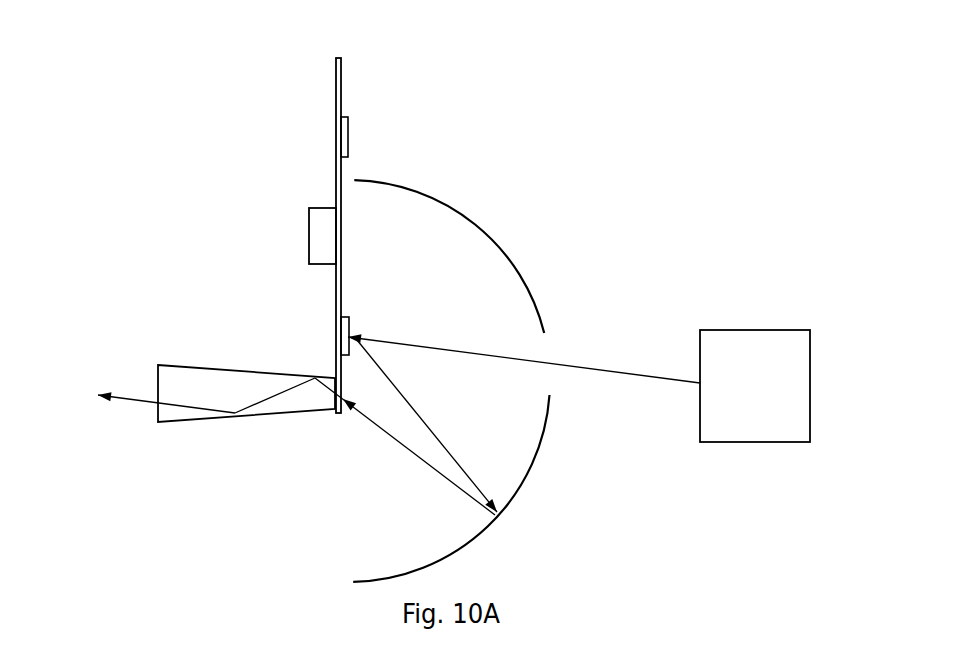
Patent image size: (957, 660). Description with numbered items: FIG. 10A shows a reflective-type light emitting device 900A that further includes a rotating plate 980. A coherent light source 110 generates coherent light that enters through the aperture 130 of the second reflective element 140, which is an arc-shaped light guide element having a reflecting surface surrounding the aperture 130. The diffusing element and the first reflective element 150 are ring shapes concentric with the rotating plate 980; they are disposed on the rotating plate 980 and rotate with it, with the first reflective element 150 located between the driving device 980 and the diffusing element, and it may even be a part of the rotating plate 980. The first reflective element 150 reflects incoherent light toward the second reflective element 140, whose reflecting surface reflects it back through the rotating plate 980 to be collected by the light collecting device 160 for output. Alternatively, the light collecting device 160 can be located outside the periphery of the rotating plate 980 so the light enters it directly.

The light emitting device 900A is at (225, 235).
The rotating plate 980 is at (305, 233).
The first reflective element 150 is at (347, 317).
The second reflective element 140 is at (348, 320).
The aperture 130 is at (552, 378).
The coherent light source 110 is at (757, 448).
The light collecting device 160 is at (240, 420).